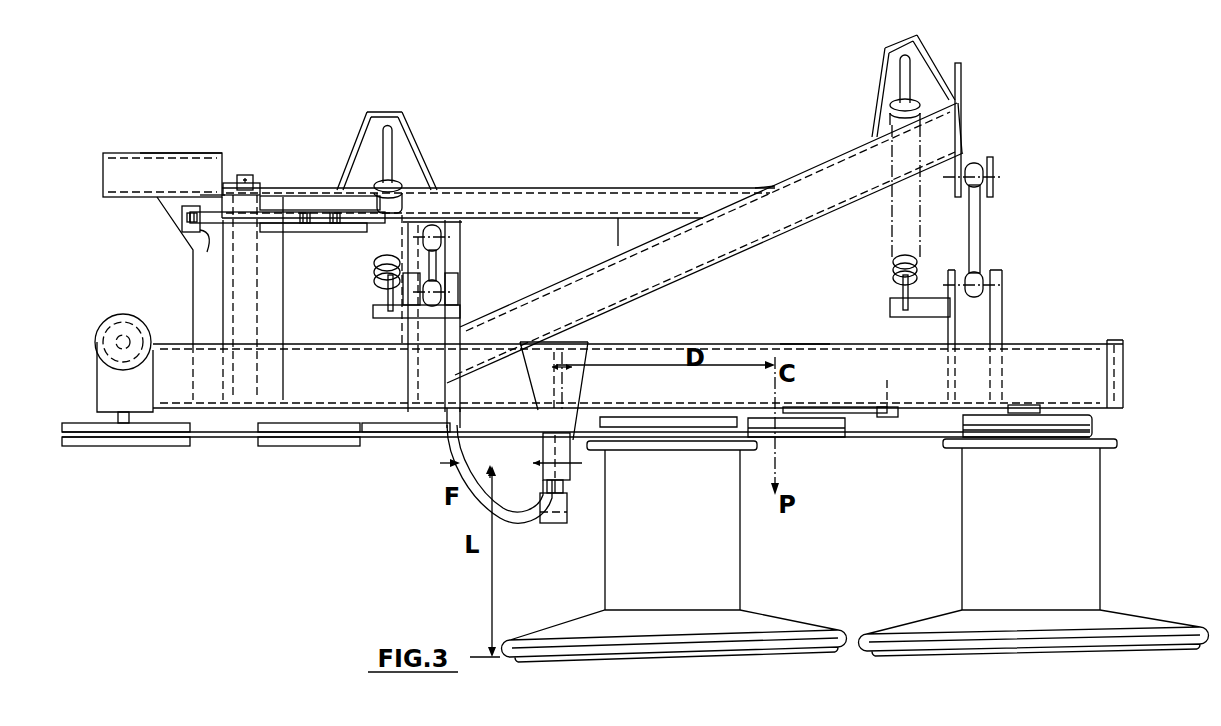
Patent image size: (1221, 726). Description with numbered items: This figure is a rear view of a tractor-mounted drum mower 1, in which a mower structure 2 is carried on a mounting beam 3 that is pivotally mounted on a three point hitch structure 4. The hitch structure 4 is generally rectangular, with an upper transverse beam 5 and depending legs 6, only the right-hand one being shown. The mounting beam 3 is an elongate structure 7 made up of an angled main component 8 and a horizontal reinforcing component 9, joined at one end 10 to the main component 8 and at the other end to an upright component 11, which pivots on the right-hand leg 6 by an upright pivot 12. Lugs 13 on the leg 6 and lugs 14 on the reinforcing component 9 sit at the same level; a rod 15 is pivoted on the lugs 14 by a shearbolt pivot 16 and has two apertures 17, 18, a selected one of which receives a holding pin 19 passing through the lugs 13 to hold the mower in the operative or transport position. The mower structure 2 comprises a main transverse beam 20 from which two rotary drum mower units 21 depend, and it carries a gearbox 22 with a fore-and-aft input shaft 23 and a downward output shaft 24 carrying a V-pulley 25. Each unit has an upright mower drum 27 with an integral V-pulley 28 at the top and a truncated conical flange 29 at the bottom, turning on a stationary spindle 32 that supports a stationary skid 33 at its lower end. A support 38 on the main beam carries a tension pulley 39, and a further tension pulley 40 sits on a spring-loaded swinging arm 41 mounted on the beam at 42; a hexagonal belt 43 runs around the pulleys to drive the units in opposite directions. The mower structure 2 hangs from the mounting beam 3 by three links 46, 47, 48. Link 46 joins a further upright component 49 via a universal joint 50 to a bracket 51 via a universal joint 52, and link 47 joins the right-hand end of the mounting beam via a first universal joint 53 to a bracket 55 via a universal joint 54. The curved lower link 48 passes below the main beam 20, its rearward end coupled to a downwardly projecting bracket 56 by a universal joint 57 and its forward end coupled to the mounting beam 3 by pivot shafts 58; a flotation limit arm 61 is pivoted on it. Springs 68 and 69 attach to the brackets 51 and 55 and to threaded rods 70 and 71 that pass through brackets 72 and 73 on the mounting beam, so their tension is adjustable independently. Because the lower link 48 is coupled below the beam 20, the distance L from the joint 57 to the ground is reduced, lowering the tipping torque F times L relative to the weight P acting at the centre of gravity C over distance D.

The drum mower 1 is at (1070, 210).
The mower structure 2 is at (1090, 338).
The mounting beam 3 is at (612, 184).
The three point hitch structure 4 is at (177, 154).
The upper transverse beam 5 is at (205, 153).
The depending leg 6 is at (192, 307).
The elongate structure 7 is at (775, 176).
The angled main component 8 is at (790, 236).
The horizontal reinforcing component 9 is at (490, 187).
The end 10 is at (758, 186).
The upright component 11 is at (286, 300).
The upright pivot 12 is at (245, 176).
The lugs 13 is at (186, 223).
The lugs 14 is at (356, 226).
The rod 15 is at (270, 232).
The pivot 16 is at (333, 226).
The aperture 17 is at (195, 250).
The aperture 18 is at (303, 226).
The holding pin 19 is at (215, 194).
The main transverse beam 20 is at (792, 344).
The rotary drum mower unit 21 is at (855, 562).
The gearbox 22 is at (96, 382).
The input shaft 23 is at (120, 335).
The output shaft 24 is at (110, 422).
The V-pulley 25 is at (176, 447).
The mower drum 27 is at (743, 592).
The V-pulley 28 is at (757, 452).
The truncated conical flange 29 is at (592, 630).
The stationary spindle 32 is at (705, 412).
The stationary skid 33 is at (792, 662).
The support 38 is at (358, 447).
The tension pulley 39 is at (302, 447).
The tension pulley 40 is at (828, 440).
The swinging arm 41 is at (868, 420).
The mounting location 42 is at (886, 408).
The hexagonal belt 43 is at (420, 440).
The link 46 is at (452, 262).
The link 47 is at (981, 240).
The link 48 is at (548, 524).
The further upright component 49 is at (442, 241).
The universal joint 50 is at (440, 234).
The bracket 51 is at (460, 284).
The universal joint 52 is at (440, 291).
The first universal joint 53 is at (990, 162).
The universal joint 54 is at (985, 296).
The bracket 55 is at (1005, 326).
The bracket 56 is at (584, 392).
The universal joint 57 is at (578, 486).
The pivot shafts 58 is at (497, 438).
The flotation limit arm 61 is at (575, 355).
The spring 68 is at (382, 288).
The spring 69 is at (892, 275).
The threaded rod 70 is at (393, 162).
The threaded rod 71 is at (912, 80).
The bracket 72 is at (415, 140).
The bracket 73 is at (876, 112).